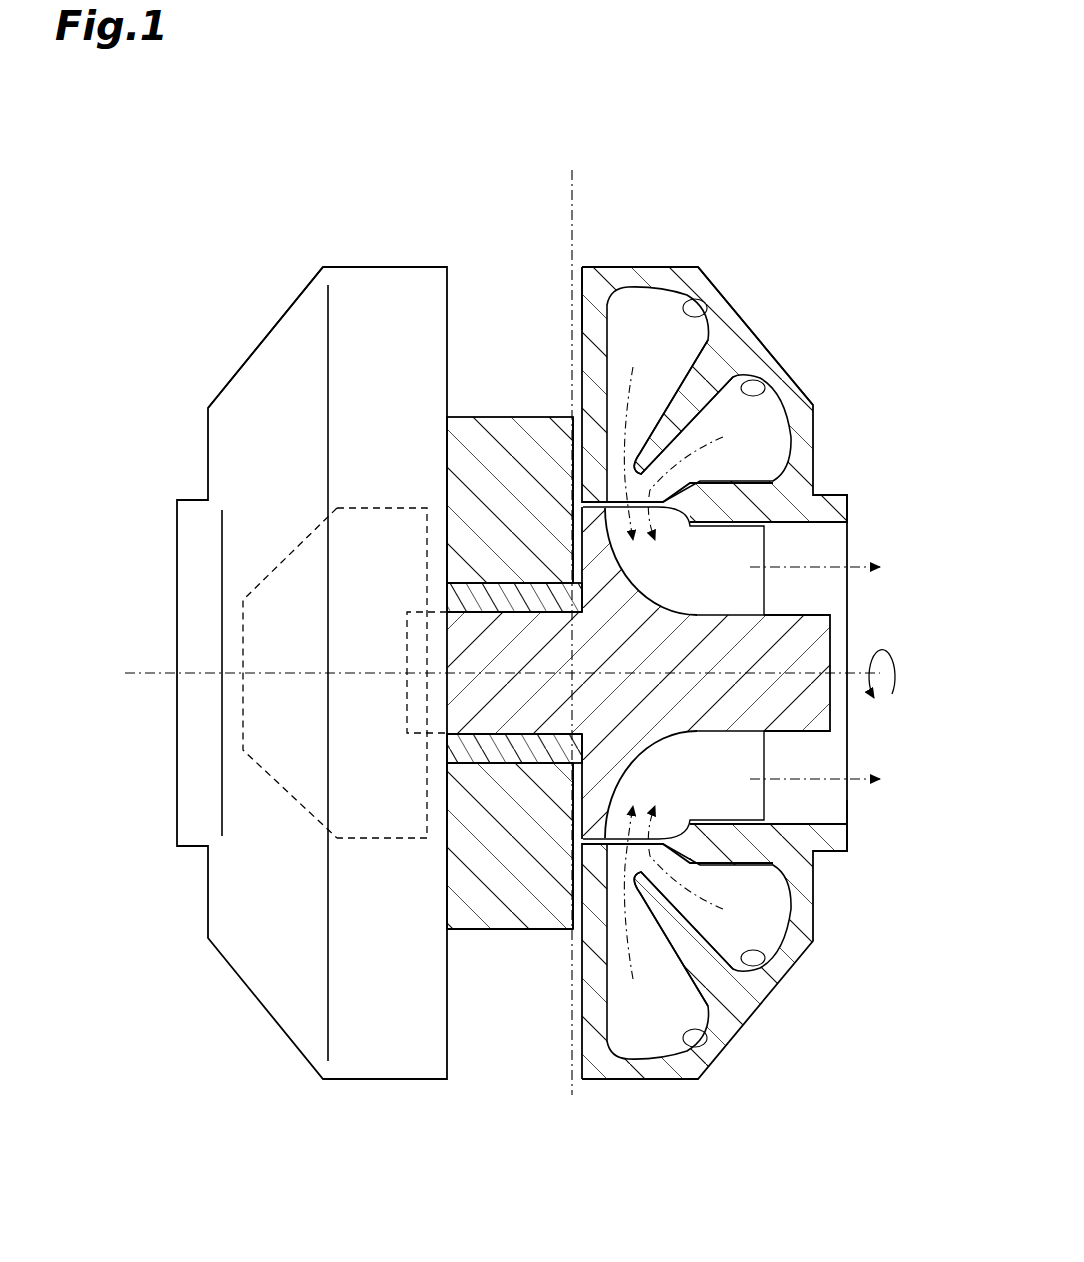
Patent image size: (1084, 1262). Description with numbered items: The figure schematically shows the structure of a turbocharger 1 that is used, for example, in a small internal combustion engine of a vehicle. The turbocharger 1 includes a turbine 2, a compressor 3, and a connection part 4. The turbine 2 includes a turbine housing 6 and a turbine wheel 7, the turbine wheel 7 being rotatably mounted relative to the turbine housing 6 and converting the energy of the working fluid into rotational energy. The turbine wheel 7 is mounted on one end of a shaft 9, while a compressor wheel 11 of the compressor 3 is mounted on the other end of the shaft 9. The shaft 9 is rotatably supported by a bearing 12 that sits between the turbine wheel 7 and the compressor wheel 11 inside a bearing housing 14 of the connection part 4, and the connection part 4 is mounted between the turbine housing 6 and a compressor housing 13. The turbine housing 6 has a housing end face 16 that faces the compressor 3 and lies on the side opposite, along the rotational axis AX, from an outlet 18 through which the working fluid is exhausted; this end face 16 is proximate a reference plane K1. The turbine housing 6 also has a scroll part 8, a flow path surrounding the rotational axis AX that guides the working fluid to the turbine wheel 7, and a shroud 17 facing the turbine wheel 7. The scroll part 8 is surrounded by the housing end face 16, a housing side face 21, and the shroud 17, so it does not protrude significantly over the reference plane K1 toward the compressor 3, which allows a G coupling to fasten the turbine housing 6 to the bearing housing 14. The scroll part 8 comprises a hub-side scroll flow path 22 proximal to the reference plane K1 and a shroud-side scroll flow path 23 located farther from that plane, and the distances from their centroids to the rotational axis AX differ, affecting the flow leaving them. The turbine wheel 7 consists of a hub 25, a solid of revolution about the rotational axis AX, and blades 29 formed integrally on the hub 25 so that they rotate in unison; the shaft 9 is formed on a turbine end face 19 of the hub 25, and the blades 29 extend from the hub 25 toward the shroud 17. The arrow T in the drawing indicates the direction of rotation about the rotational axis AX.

The turbocharger 1 is at (745, 148).
The turbine 2 is at (634, 265).
The compressor 3 is at (382, 265).
The connection part 4 is at (472, 415).
The turbine housing 6 is at (835, 494).
The turbine wheel 7 is at (680, 673).
The scroll part 8 is at (683, 673).
The shaft 9 is at (557, 738).
The compressor wheel 11 is at (297, 547).
The bearing 12 is at (488, 766).
The compressor housing 13 is at (250, 355).
The bearing housing 14 is at (560, 931).
The housing end face 16 is at (574, 290).
The shroud 17 is at (772, 486).
The outlet 18 is at (845, 805).
The turbine end face 19 is at (573, 542).
The housing side face 21 is at (703, 273).
The hub-side scroll flow path 22 is at (707, 308).
The shroud-side scroll flow path 23 is at (765, 388).
The hub 25 is at (654, 662).
The blades 29 is at (700, 583).
The rotational axis AX is at (138, 672).
The reference plane K1 is at (572, 182).
The rotation direction T is at (896, 668).